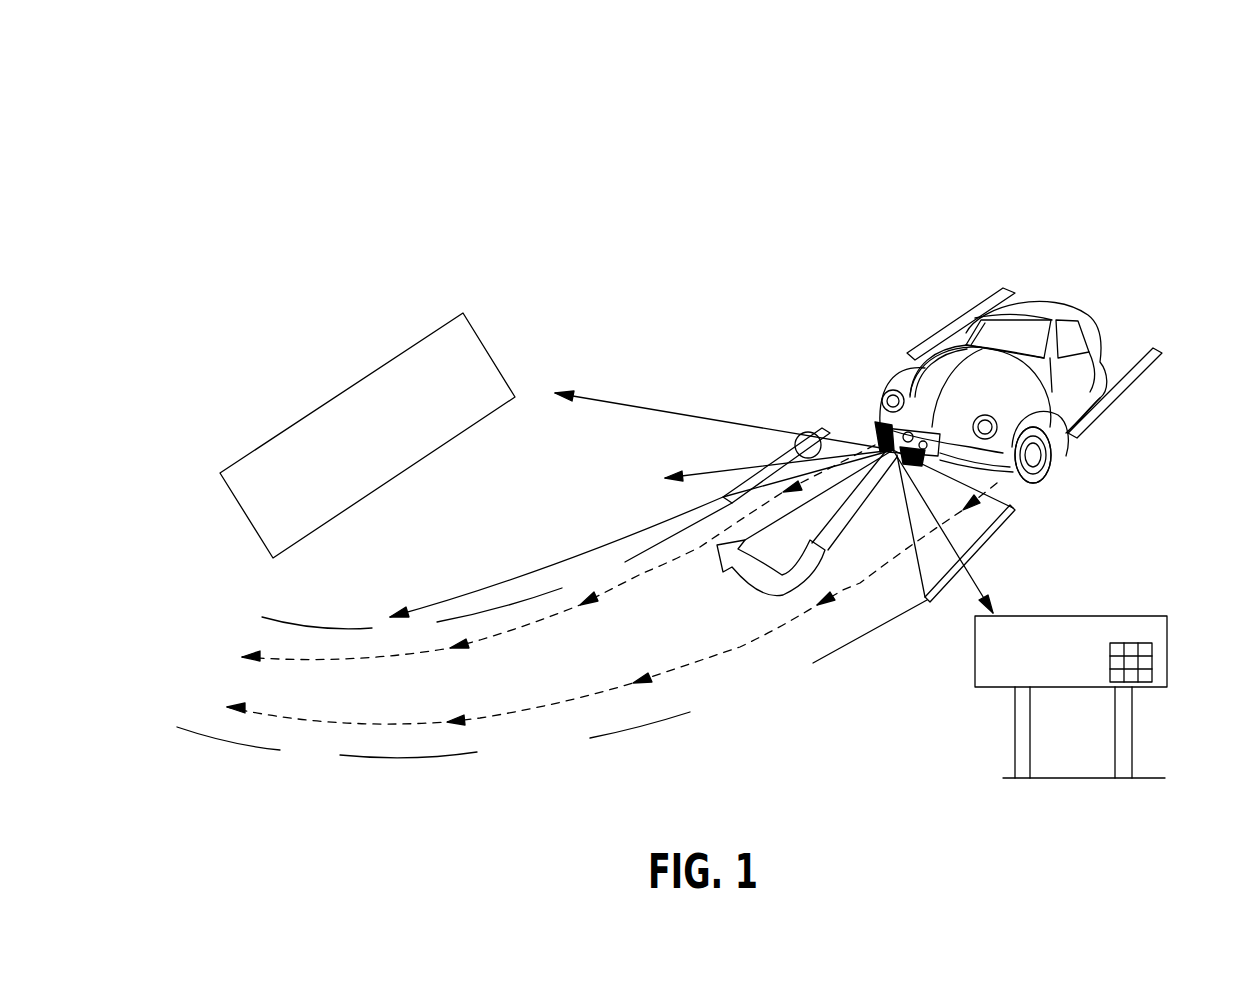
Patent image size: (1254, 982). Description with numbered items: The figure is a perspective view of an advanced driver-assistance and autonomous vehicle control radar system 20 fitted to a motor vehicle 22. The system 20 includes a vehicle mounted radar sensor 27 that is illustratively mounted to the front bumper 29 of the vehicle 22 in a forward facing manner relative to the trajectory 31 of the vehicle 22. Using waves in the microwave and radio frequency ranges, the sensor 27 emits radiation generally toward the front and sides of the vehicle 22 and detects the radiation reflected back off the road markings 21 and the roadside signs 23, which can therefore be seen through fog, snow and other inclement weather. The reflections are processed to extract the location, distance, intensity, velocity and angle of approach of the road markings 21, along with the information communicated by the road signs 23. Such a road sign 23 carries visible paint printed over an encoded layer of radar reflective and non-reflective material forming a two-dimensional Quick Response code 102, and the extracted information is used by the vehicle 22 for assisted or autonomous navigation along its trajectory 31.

The advanced driver-assistance and autonomous vehicle control radar system 20 is at (708, 168).
The road markings 21 is at (493, 350).
The motor vehicle 22 is at (1046, 300).
The roadside signs 23 is at (1053, 615).
The vehicle mounted radar sensor 27 is at (882, 425).
The front bumper 29 is at (1027, 472).
The trajectory 31 is at (647, 578).
The Quick Response (QR) code 102 is at (1158, 658).